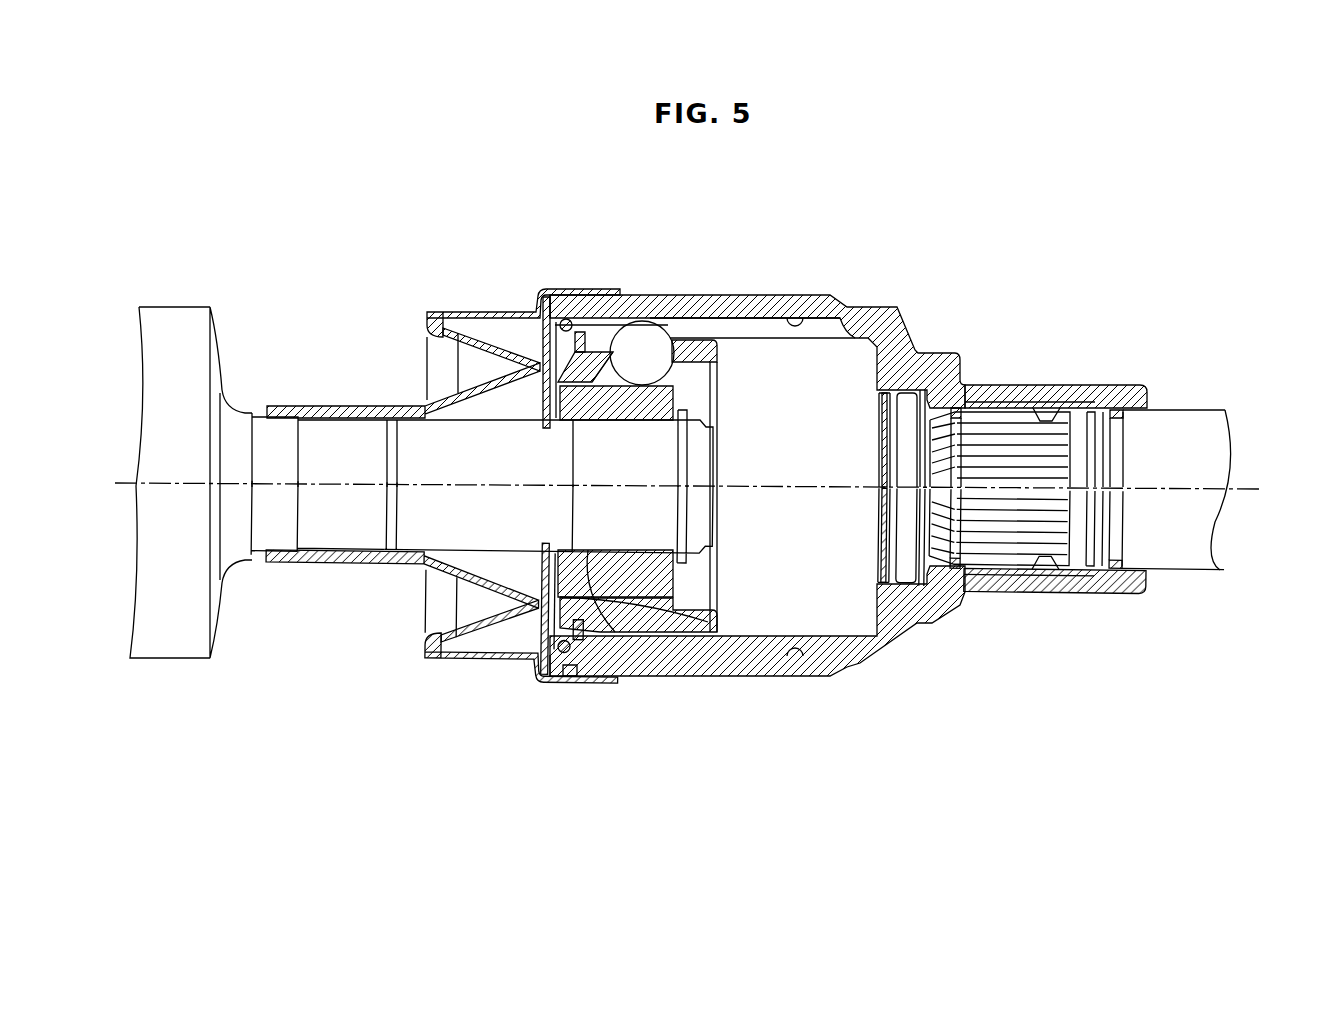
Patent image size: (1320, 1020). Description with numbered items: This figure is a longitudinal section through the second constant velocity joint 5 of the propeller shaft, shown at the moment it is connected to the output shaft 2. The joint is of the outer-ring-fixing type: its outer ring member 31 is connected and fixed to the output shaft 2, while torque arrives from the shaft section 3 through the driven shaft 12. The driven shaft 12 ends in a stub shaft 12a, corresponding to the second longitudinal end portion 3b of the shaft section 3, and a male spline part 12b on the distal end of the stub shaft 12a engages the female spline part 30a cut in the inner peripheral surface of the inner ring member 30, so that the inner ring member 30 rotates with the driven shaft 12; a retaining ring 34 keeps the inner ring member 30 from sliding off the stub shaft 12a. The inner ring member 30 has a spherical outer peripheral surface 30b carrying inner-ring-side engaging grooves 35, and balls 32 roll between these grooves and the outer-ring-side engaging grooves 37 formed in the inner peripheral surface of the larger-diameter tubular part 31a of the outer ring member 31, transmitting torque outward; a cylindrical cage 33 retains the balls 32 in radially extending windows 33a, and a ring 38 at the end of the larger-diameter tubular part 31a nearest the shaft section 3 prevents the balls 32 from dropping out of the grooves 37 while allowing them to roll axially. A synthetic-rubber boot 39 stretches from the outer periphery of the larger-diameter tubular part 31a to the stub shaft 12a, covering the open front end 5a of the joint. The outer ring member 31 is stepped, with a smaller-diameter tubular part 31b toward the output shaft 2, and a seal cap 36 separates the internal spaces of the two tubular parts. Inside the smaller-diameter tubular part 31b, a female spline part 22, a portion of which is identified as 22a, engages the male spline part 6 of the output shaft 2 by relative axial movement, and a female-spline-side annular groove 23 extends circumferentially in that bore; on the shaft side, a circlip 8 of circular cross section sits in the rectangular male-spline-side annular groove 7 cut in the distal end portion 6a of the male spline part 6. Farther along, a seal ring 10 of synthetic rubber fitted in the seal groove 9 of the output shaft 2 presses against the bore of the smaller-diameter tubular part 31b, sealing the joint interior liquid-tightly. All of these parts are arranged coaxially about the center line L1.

The output shaft 2 is at (1190, 397).
The shaft section 3 is at (165, 285).
The second longitudinal end portion 3b is at (190, 322).
The second constant velocity joint 5 is at (885, 255).
The open front end 5a is at (525, 658).
The male spline part 6 is at (1030, 547).
The distal end portion 6a is at (958, 550).
The male-spline-side annular groove 7 is at (975, 560).
The circlip 8 is at (958, 566).
The seal groove 9 is at (1125, 528).
The seal ring 10 is at (1115, 566).
The driven shaft 12 is at (318, 484).
The stub shaft 12a is at (420, 525).
The male spline part 12b is at (612, 552).
The female spline part 22 is at (1003, 403).
The sleeve groove 22a is at (1050, 412).
The female-spline-side annular groove 23 is at (955, 406).
The inner ring member 30 is at (613, 612).
The female spline part 30a is at (645, 600).
The outer peripheral surface 30b is at (660, 615).
The outer ring member 31 is at (763, 300).
The larger-diameter tubular part 31a is at (686, 305).
The smaller-diameter tubular part 31b is at (1105, 385).
The balls 32 is at (648, 340).
The cage 33 is at (700, 345).
The windows 33a is at (626, 330).
The retaining ring 34 is at (713, 645).
The inner-ring-side engaging grooves 35 is at (570, 378).
The seal cap 36 is at (893, 585).
The outer-ring-side engaging grooves 37 is at (803, 325).
The ring 38 is at (553, 678).
The boot 39 is at (443, 302).
The axis line L1 is at (1263, 488).